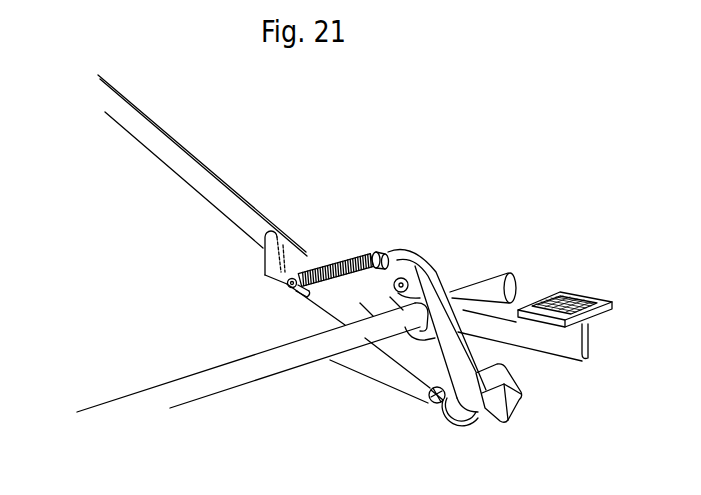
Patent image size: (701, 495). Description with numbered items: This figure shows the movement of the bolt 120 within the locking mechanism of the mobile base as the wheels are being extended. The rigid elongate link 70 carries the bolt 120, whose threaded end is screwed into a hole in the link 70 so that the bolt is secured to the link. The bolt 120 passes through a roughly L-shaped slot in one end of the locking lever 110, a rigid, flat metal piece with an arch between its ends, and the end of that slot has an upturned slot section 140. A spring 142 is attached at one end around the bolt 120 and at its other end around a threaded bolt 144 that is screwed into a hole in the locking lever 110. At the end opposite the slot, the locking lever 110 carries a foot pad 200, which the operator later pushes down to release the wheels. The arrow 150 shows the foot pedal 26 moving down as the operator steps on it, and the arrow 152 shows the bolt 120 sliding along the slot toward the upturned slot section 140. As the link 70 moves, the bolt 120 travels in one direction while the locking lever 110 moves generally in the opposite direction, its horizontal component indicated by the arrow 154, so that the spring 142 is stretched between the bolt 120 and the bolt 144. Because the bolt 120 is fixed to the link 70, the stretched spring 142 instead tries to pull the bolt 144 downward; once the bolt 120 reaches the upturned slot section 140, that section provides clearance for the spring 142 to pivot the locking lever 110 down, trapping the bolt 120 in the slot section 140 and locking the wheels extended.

The link 70 is at (156, 150).
The upturned slot section 140 is at (273, 229).
The spring 142 is at (339, 259).
The threaded bolt 144 is at (384, 254).
The arrow 154 is at (421, 278).
The arrow 150 is at (567, 286).
The arrow 152 is at (345, 325).
The bolt 120 is at (290, 287).
The locking lever 110 is at (447, 326).
The foot pad 200 is at (497, 383).
The foot pedal 26 is at (607, 388).